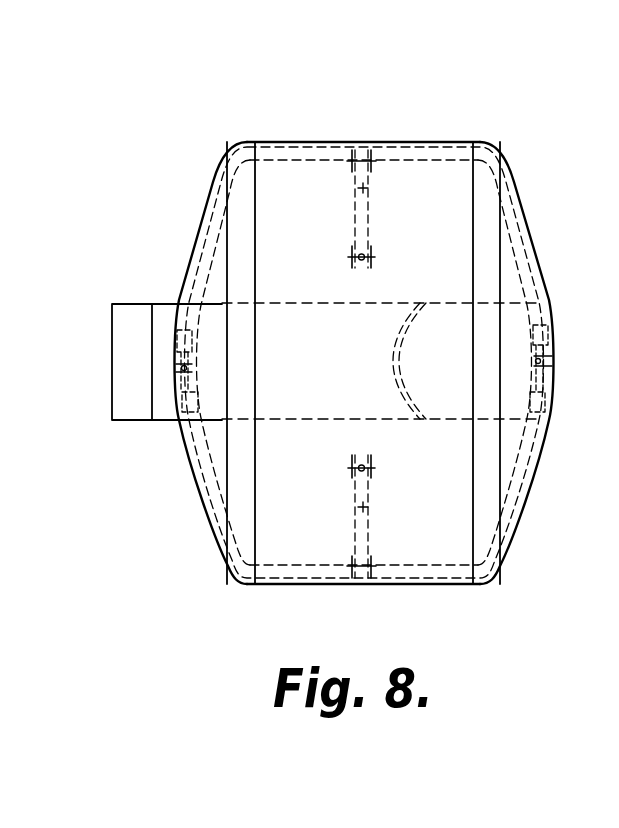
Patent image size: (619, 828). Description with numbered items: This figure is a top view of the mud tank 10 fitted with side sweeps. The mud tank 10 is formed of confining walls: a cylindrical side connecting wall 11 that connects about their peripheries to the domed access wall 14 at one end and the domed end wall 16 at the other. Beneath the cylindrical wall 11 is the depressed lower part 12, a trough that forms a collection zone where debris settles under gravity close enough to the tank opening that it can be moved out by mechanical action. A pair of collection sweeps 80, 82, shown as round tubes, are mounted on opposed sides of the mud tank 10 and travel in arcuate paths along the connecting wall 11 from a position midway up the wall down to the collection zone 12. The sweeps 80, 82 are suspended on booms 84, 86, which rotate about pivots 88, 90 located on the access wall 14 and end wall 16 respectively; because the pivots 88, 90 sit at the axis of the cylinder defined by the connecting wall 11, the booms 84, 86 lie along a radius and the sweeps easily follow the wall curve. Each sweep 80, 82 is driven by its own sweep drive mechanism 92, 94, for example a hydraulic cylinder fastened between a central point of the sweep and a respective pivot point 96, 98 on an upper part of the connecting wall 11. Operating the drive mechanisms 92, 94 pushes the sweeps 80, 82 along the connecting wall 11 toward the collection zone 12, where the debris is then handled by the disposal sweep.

The mud tank 10 is at (258, 92).
The cylindrical wall 11 is at (305, 141).
The depressed lower part 12 is at (341, 383).
The access wall 14 is at (214, 181).
The end wall 16 is at (515, 180).
The collection sweep 80 is at (425, 141).
The collection sweep 82 is at (413, 580).
The boom 84 is at (526, 247).
The boom 86 is at (214, 224).
The pivot 88 is at (172, 365).
The pivot 90 is at (553, 357).
The sweep drive mechanism 92 is at (374, 188).
The sweep drive mechanism 94 is at (375, 507).
The pivot point 96 is at (375, 257).
The pivot point 98 is at (376, 468).